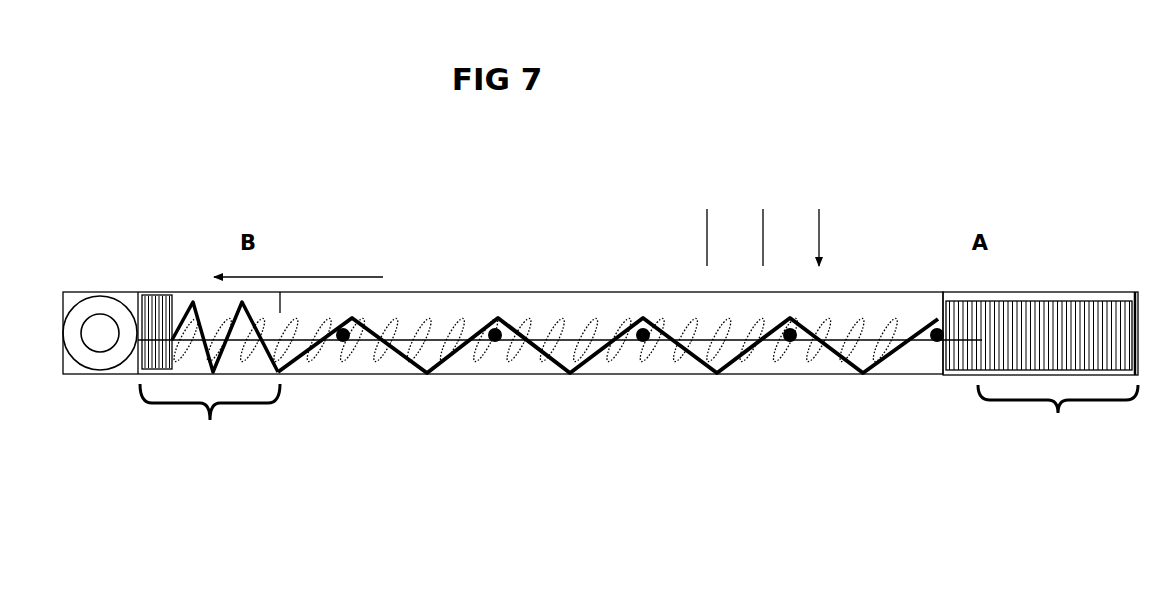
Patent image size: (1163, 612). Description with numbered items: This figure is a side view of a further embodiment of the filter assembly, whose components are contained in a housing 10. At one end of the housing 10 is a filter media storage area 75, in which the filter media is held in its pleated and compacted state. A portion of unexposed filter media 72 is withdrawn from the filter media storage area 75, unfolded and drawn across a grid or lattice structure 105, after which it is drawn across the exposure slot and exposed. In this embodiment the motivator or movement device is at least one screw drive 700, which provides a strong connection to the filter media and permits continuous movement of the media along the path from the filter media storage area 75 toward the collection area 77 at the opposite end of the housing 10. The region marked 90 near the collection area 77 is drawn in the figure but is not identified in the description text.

The housing 10 is at (523, 377).
The collection area 77 is at (155, 294).
The biasing spring section 90 is at (210, 406).
The screw drive 700 is at (428, 297).
The grid or lattice structure 105 is at (657, 375).
The portion of unexposed filter media 72 is at (1038, 327).
The filter media storage area 75 is at (1058, 446).